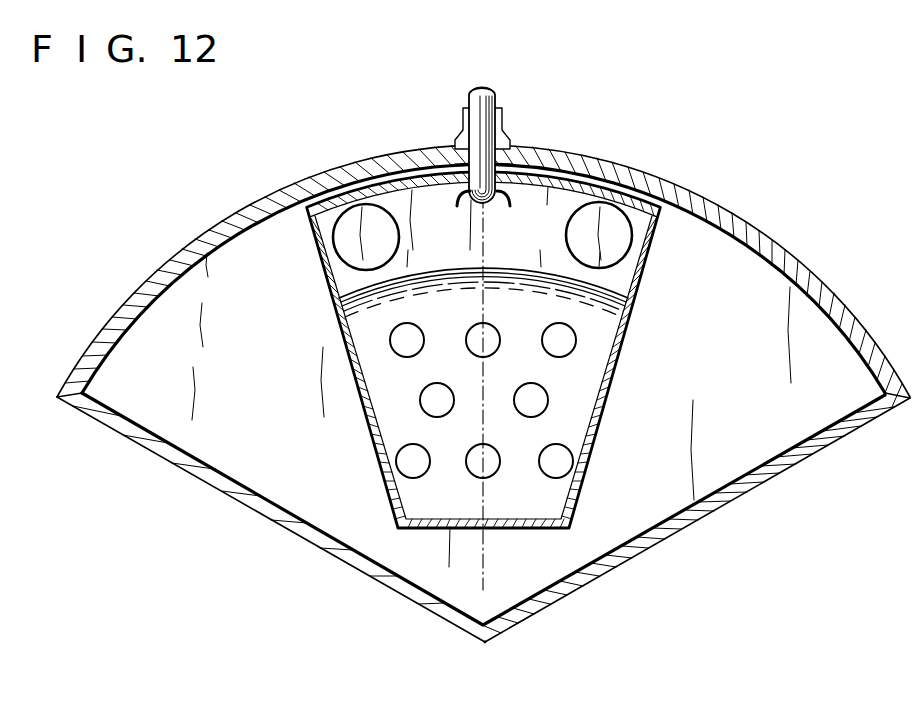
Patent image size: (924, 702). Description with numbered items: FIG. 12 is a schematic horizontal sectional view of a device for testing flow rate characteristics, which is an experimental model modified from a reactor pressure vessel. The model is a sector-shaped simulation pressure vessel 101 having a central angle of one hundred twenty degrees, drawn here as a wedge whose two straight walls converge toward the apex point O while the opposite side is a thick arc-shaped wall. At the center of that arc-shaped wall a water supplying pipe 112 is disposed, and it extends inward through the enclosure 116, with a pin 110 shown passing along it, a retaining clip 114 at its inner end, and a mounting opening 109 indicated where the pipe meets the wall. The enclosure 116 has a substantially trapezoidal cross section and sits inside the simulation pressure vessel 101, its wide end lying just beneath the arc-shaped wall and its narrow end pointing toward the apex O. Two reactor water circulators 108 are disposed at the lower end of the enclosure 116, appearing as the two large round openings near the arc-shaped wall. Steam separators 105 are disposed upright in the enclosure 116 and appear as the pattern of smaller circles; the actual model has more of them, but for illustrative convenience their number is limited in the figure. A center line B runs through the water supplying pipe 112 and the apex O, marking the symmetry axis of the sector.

The simulation pressure vessel 101 is at (344, 165).
The steam separators 105 is at (572, 468).
The reactor water circulators 108 is at (618, 221).
The mounting opening 109 is at (514, 191).
The pin 110 is at (482, 110).
The water supplying pipe 112 is at (497, 94).
The retaining clip 114 is at (461, 198).
The enclosure 116 is at (632, 305).
The center line B is at (486, 549).
The apex point O is at (488, 645).